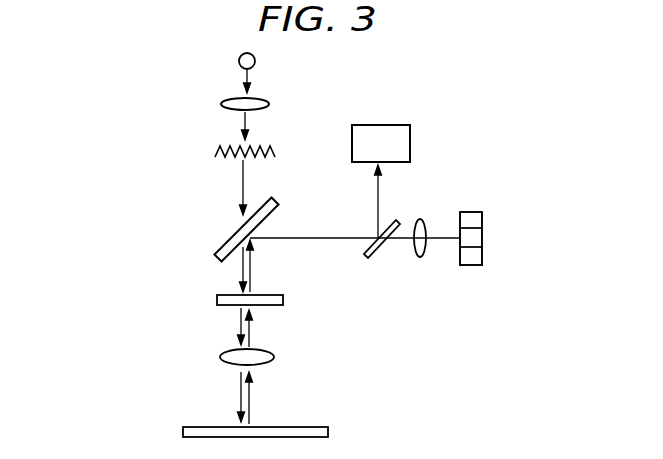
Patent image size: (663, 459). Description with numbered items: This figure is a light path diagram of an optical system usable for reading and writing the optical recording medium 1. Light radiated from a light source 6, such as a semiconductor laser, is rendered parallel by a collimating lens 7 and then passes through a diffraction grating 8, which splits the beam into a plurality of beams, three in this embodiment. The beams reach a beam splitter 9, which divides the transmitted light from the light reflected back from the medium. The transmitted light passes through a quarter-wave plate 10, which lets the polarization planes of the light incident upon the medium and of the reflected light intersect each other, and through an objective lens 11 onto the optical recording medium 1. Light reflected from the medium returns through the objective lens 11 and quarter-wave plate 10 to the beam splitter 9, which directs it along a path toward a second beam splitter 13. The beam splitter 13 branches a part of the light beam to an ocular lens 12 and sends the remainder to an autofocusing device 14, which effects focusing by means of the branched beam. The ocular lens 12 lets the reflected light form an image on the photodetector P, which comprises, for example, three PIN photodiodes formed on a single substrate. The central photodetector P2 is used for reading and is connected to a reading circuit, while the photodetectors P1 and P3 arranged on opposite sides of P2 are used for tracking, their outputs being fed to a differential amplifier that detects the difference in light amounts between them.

The optical recording medium 1 is at (328, 432).
The light source 6 is at (255, 59).
The collimating lens 7 is at (270, 104).
The diffraction grating 8 is at (275, 152).
The beam splitter 9 is at (280, 203).
The quarter-wave plate 10 is at (283, 300).
The objective lens 11 is at (274, 357).
The ocular lens 12 is at (424, 257).
The beam splitter 13 is at (370, 262).
The autofocusing device 14 is at (410, 140).
The photodetector P is at (473, 210).
The tracking photodetector P1 is at (482, 218).
The reading photodetector P2 is at (482, 240).
The tracking photodetector P3 is at (482, 258).